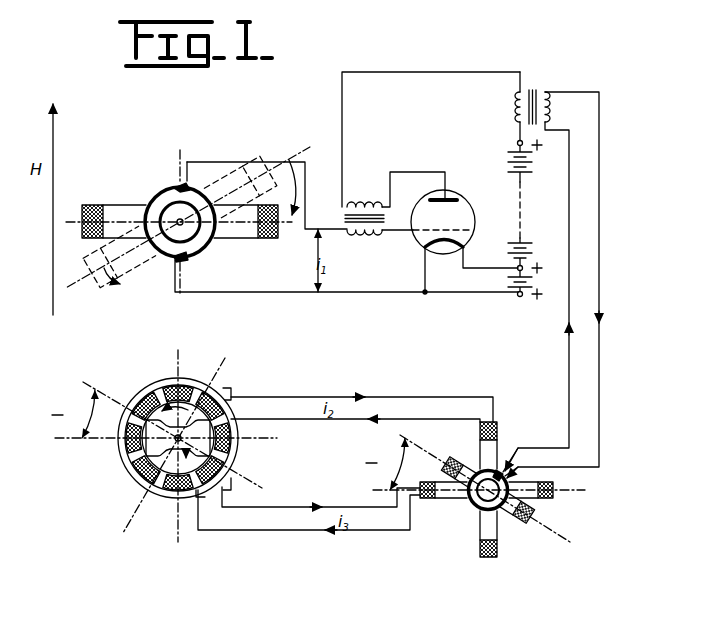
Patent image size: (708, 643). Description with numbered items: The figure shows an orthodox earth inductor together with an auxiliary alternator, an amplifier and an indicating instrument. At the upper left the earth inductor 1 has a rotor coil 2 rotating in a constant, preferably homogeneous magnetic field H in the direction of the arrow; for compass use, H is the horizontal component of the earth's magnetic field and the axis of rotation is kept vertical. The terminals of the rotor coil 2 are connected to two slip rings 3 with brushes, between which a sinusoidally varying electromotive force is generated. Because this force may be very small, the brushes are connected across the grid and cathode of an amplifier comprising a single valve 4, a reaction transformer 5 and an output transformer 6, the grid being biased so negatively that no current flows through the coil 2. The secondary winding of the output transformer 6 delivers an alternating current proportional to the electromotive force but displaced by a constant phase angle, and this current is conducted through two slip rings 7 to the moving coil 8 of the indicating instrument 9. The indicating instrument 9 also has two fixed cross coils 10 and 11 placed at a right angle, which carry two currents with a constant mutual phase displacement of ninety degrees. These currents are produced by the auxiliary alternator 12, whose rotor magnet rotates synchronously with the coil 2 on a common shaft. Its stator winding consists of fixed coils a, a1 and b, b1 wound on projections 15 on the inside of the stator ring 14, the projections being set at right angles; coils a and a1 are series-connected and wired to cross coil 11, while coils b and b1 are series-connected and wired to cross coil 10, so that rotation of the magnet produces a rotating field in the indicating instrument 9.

The rotating coil system 1 is at (148, 194).
The rotor coil 2 is at (91, 205).
The slip rings 3 is at (158, 250).
The valve 4 is at (450, 197).
The reaction transformer 5 is at (370, 203).
The output transformer 6 is at (535, 92).
The slip rings 7 is at (478, 511).
The moving coil 8 is at (533, 512).
The indicating instrument 9 is at (510, 543).
The fixed cross coil 10 is at (555, 493).
The fixed cross coil 11 is at (480, 553).
The auxiliary alternator 12 is at (107, 493).
The stator ring 14 is at (127, 462).
The projections 15 is at (140, 415).
The fixed coil a is at (153, 395).
The fixed coil b is at (186, 402).
The fixed coil a1 is at (232, 448).
The fixed coil b1 is at (150, 473).